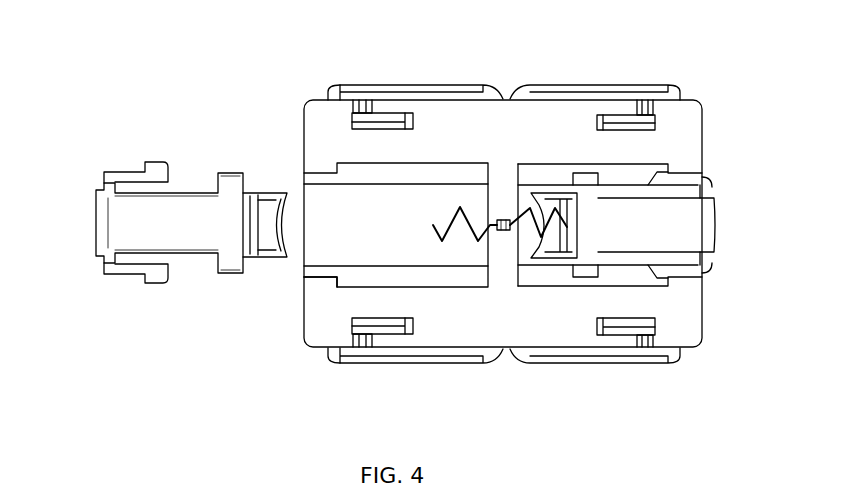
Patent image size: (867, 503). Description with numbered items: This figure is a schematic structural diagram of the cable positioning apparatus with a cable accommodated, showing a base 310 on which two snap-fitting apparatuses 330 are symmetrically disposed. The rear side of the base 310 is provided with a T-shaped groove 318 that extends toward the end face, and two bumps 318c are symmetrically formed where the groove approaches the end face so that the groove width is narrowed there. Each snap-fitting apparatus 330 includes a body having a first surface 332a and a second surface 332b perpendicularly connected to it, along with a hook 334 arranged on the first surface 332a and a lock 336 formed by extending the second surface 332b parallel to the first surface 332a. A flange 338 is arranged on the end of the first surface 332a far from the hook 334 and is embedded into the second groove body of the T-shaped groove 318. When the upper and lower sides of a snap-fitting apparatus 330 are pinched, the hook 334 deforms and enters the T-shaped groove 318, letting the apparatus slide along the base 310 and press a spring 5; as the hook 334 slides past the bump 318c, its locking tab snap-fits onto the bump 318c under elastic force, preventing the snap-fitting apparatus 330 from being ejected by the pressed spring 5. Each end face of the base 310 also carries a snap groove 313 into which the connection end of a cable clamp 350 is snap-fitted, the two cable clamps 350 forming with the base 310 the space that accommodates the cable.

The spring 5 is at (487, 192).
The base 310 is at (610, 145).
The snap groove 313 is at (373, 325).
The T-shaped groove 318 is at (373, 217).
The bump 318c is at (335, 275).
The snap-fitting apparatus 330 is at (164, 225).
The first surface 332a is at (192, 195).
The second surface 332b is at (118, 213).
The hook 334 is at (118, 162).
The lock 336 is at (256, 202).
The flange 338 is at (230, 177).
The cable clamp 350 is at (410, 82).